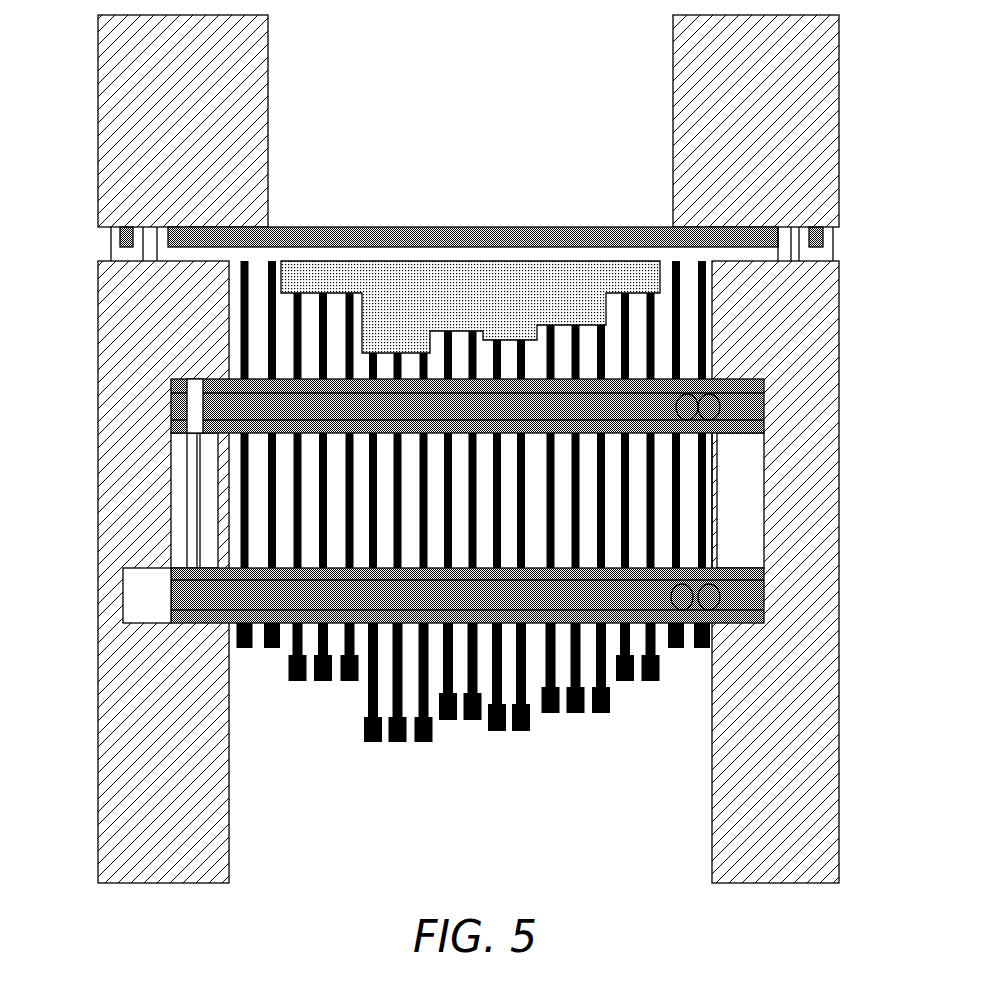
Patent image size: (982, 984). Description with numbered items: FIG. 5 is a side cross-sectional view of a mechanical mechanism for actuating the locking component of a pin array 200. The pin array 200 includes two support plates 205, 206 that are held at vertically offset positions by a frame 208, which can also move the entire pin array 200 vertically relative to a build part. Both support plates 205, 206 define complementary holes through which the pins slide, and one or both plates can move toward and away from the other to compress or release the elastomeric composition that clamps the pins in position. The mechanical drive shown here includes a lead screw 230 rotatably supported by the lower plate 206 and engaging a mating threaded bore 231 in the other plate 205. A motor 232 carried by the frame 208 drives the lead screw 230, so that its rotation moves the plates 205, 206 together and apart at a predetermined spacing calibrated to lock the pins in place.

The pin array 200 is at (89, 460).
The support plate 205 is at (730, 408).
The support plate 206 is at (728, 598).
The frame 208 is at (110, 742).
The lead screw 230 is at (185, 517).
The threaded bore 231 is at (171, 407).
The motor 232 is at (123, 598).